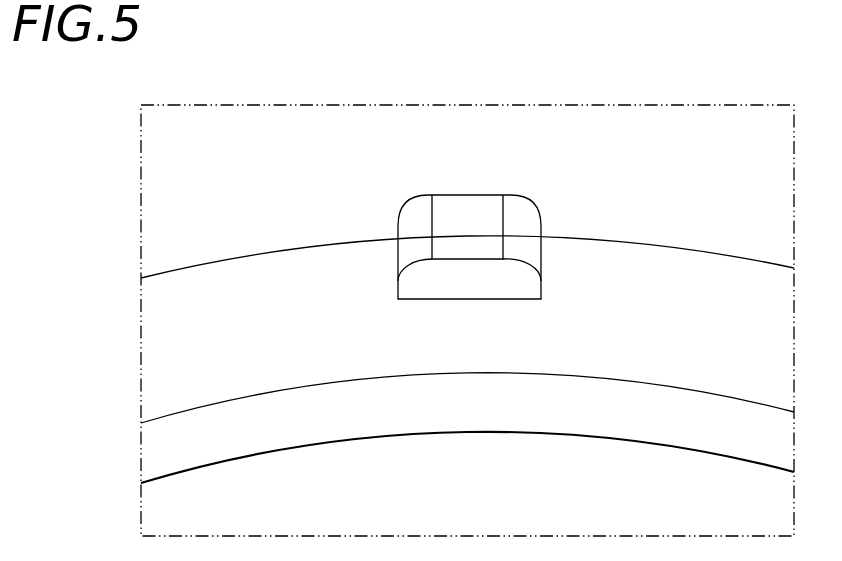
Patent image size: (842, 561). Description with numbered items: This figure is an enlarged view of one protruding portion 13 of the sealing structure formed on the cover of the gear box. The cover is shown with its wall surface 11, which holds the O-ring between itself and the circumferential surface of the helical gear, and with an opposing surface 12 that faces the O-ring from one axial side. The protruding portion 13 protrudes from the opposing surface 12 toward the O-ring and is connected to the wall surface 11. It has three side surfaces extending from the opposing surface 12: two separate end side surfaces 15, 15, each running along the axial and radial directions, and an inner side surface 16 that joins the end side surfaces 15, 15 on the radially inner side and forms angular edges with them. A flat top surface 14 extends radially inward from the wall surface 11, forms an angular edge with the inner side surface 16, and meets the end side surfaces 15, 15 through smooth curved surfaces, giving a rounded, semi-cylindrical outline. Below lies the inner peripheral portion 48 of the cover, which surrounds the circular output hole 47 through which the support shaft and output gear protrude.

The wall surface 11 is at (288, 178).
The opposing surface 12 is at (304, 328).
The protruding portion 13 is at (469, 211).
The top surface 14 is at (481, 240).
The end side surface 15 is at (398, 259).
The inner side surface 16 is at (481, 294).
The output hole 47 is at (559, 502).
The inner peripheral portion 48 is at (442, 411).